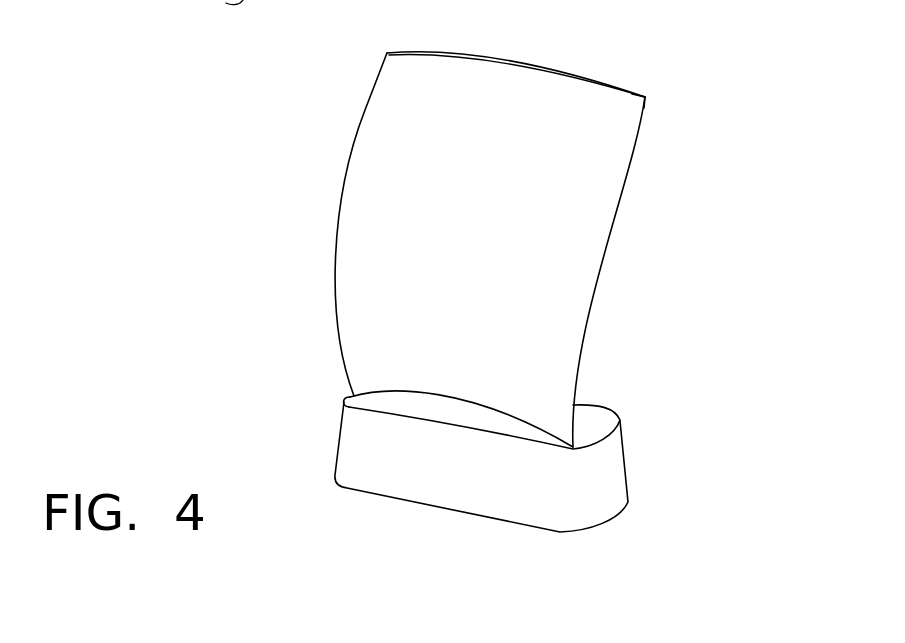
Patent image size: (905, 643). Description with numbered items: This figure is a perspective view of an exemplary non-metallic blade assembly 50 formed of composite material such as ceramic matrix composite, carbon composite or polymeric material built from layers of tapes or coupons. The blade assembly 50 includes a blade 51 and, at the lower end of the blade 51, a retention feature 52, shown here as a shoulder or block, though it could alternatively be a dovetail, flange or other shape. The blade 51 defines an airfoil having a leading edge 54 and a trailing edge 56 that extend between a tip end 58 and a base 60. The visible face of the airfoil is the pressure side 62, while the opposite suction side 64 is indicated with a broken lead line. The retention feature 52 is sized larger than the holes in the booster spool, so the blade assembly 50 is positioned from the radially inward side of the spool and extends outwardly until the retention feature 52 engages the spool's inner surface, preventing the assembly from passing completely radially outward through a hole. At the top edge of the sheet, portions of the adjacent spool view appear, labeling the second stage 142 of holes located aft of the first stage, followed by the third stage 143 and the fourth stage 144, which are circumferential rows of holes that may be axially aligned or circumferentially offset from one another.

The non-metallic blade assembly 50 is at (641, 46).
The blade 51 is at (658, 84).
The retention feature 52 is at (659, 450).
The leading edge 54 is at (336, 226).
The trailing edge 56 is at (606, 265).
The tip end 58 is at (450, 51).
The base 60 is at (433, 390).
The pressure side 62 is at (469, 250).
The suction side 64 is at (585, 155).
The second stage 142 is at (40, 0).
The third stage 143 is at (126, 6).
The fourth stage 144 is at (201, 10).